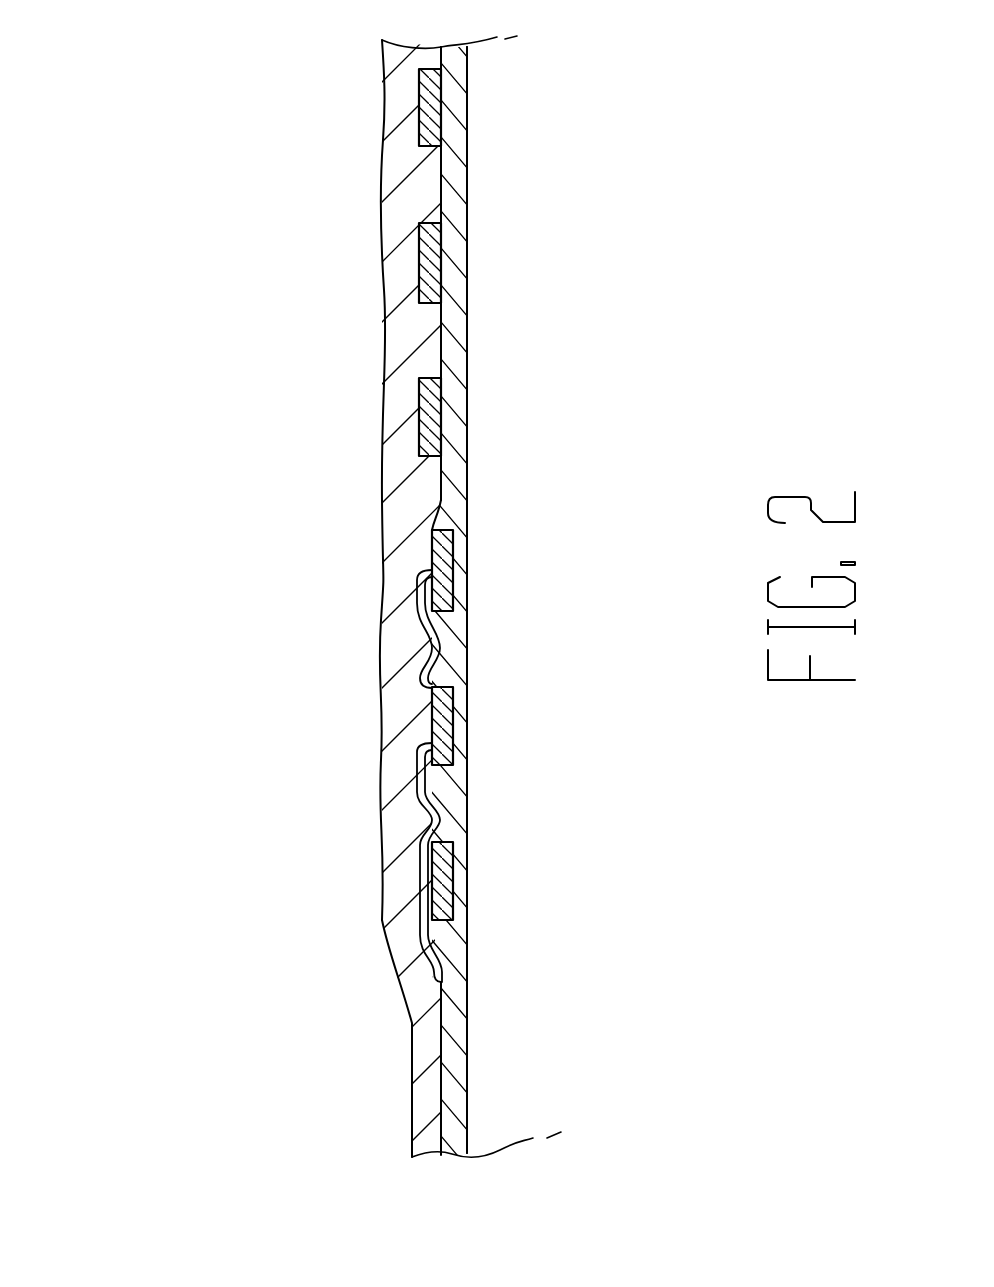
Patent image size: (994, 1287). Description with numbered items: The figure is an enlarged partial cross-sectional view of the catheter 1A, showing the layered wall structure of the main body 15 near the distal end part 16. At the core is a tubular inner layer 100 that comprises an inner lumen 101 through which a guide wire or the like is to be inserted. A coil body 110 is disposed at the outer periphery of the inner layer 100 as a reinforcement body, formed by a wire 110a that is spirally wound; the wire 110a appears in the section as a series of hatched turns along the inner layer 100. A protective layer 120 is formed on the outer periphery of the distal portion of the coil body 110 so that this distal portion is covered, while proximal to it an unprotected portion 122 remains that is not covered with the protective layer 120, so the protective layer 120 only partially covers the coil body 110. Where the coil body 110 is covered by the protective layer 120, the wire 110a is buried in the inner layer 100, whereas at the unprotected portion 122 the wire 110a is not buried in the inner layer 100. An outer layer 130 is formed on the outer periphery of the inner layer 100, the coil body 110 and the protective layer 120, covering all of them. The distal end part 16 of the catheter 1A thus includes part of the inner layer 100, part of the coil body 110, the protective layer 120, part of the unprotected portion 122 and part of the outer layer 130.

The catheter 1A is at (360, 589).
The main body 15 is at (383, 780).
The distal end part 16 is at (413, 1120).
The inner layer 100 is at (455, 247).
The inner lumen 101 is at (468, 468).
The coil body 110 is at (432, 551).
The wire 110a is at (441, 102).
The protective layer 120 is at (433, 822).
The unprotected portion 122 is at (384, 274).
The outer layer 130 is at (395, 118).